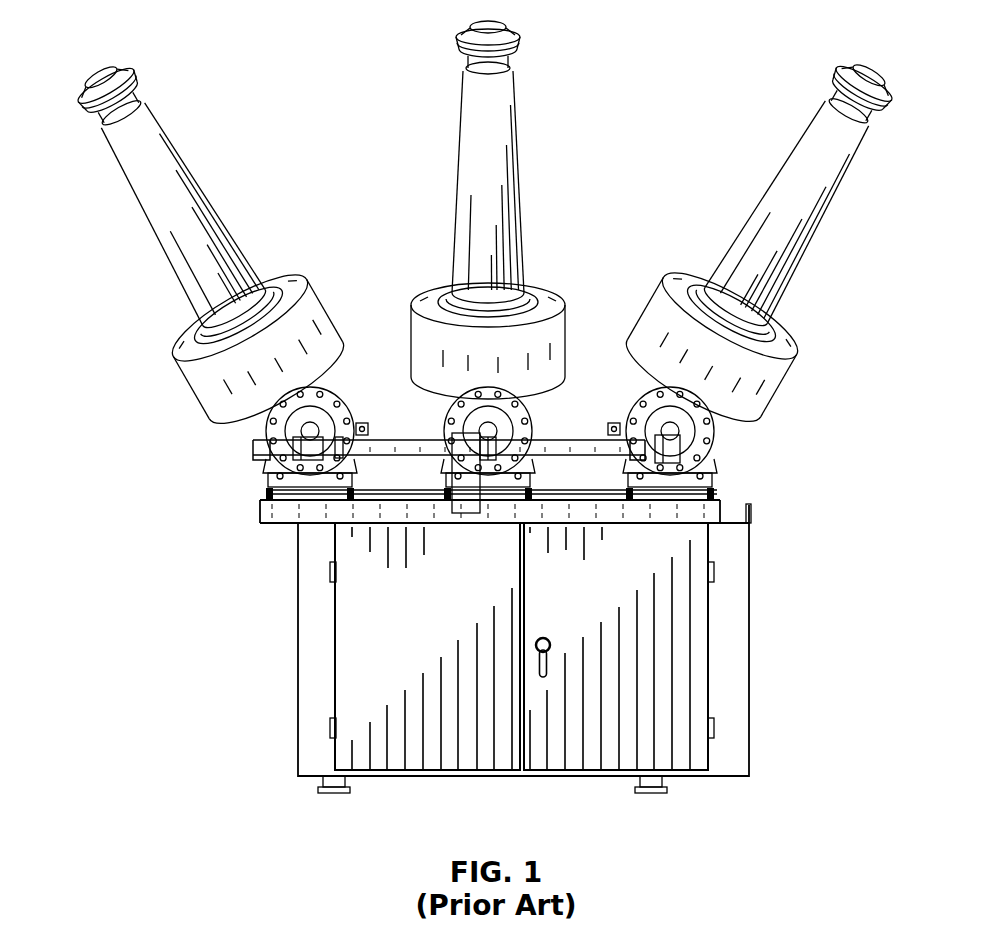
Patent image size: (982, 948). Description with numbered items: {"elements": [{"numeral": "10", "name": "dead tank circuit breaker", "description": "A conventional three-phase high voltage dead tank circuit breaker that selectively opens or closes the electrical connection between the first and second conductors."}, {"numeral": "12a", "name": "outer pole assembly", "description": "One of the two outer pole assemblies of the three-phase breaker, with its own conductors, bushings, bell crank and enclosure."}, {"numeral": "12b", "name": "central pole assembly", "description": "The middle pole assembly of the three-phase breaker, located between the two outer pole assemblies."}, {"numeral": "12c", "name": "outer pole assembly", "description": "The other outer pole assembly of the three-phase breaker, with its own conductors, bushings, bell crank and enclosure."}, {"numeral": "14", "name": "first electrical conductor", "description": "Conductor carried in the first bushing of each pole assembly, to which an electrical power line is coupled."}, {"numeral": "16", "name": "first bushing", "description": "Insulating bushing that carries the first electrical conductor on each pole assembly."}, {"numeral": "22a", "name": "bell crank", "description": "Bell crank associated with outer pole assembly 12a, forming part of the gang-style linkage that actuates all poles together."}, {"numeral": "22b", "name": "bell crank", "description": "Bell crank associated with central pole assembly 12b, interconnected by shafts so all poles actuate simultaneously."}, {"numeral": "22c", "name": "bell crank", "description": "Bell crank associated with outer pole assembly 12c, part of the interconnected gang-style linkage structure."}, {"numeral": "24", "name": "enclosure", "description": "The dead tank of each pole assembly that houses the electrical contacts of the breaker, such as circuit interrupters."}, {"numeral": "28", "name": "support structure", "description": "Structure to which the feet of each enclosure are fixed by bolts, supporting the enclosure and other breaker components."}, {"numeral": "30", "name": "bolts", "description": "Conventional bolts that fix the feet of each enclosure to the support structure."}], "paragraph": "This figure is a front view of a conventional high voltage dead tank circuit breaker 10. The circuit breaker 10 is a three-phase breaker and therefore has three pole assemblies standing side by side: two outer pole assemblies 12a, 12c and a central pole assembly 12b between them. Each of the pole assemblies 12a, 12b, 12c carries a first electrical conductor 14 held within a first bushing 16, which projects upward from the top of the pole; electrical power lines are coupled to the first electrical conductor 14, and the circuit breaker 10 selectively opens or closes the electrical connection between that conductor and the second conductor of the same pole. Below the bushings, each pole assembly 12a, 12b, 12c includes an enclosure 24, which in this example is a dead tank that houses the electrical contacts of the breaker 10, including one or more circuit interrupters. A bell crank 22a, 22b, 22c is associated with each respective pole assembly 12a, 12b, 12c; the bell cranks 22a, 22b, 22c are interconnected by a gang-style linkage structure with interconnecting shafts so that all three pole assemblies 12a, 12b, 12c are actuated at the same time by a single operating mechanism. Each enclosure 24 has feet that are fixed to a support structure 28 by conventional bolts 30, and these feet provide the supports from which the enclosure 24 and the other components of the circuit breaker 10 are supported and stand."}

The circuit breaker / switchgear cabinet 10 is at (300, 638).
The first pole insulator unit 12a is at (203, 219).
The second pole insulator unit 12b is at (568, 333).
The third pole insulator unit 12c is at (782, 385).
The terminal cap 14 is at (102, 84).
The bushing insulator 16 is at (203, 203).
The first pole actuator 22a is at (307, 452).
The second pole actuator 22b is at (488, 453).
The third pole actuator 22c is at (672, 448).
The bearing housing 24 is at (260, 427).
The base rail 28 is at (290, 483).
The linkage clamp 30 is at (348, 465).